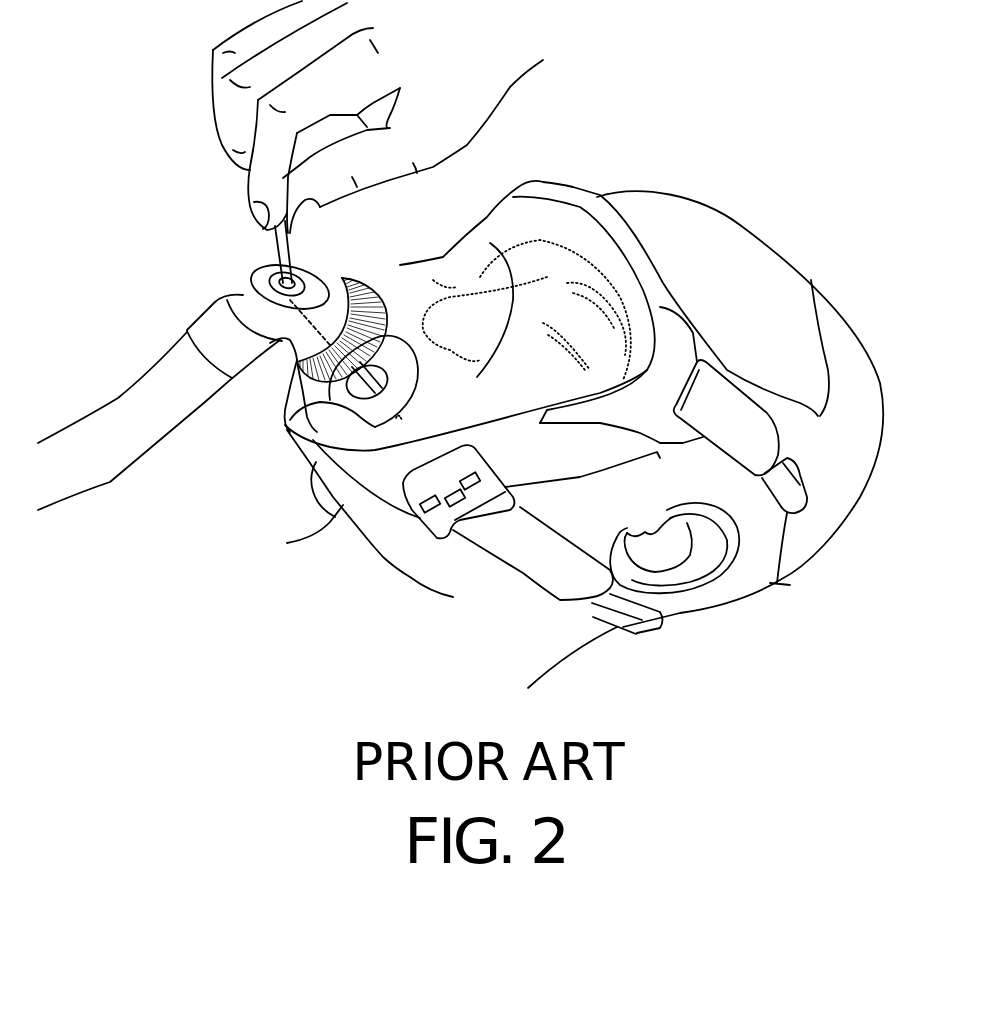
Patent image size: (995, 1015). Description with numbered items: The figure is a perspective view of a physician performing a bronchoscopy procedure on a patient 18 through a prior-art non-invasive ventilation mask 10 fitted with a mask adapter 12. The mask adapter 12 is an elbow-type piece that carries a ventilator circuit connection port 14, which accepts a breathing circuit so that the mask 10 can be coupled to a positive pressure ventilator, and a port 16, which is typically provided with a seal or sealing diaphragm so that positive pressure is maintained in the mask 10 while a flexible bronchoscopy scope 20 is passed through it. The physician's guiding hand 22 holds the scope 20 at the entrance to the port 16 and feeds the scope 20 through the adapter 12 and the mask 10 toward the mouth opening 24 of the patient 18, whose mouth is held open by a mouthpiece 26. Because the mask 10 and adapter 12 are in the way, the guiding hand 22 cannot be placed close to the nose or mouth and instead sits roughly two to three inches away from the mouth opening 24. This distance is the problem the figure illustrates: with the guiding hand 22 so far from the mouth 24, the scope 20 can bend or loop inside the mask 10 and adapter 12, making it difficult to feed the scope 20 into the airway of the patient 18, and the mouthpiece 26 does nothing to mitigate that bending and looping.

The non-invasive ventilation mask 10 is at (547, 178).
The mask adapter 12 is at (240, 292).
The ventilator circuit connection port 14 is at (200, 358).
The port 16 is at (293, 268).
The patient 18 is at (737, 222).
The flexible bronchoscopy scope 20 is at (275, 252).
The guiding hand 22 is at (228, 143).
The mouth opening 24 is at (388, 426).
The mouthpiece 26 is at (343, 410).